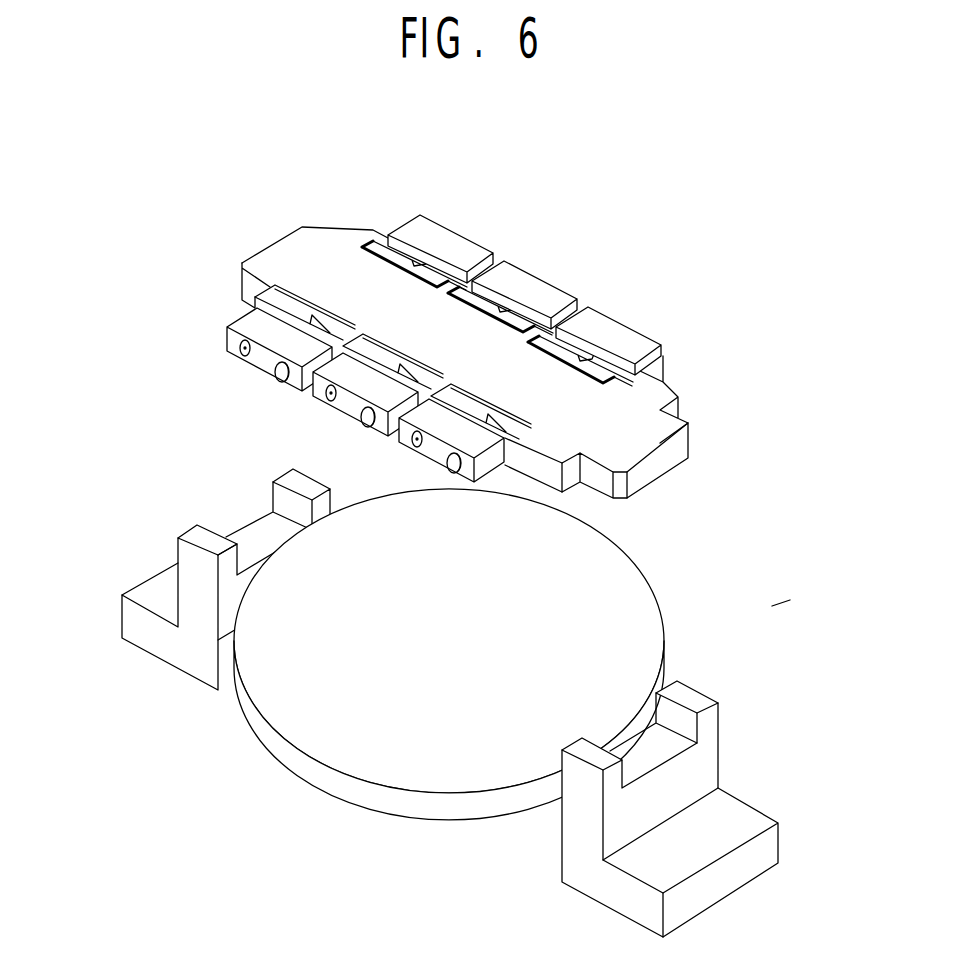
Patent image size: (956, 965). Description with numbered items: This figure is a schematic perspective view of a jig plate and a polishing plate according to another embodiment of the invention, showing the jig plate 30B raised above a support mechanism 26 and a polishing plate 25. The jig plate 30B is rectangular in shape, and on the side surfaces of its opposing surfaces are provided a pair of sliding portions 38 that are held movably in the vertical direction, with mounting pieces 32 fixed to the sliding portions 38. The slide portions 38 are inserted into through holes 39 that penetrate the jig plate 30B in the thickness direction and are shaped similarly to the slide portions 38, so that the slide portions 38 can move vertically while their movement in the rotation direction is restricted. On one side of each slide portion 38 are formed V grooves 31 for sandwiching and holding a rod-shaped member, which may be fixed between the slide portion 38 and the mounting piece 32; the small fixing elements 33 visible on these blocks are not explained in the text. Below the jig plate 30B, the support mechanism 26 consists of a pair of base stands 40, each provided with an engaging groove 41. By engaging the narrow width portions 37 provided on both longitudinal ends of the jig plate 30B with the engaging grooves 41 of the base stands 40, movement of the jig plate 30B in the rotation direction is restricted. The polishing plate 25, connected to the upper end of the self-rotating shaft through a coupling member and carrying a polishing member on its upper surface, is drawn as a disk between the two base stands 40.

The polishing plate 25 is at (417, 750).
The support mechanism 26 is at (790, 596).
The jig plate 30B is at (333, 277).
The V grooves 31 is at (300, 330).
The mounting pieces 32 is at (468, 250).
The knob 33 is at (450, 464).
The narrow width portions 37 is at (280, 253).
The sliding portions 38 is at (590, 358).
The through holes 39 is at (630, 350).
The base stands 40 is at (152, 590).
The engaging grooves 41 is at (667, 742).